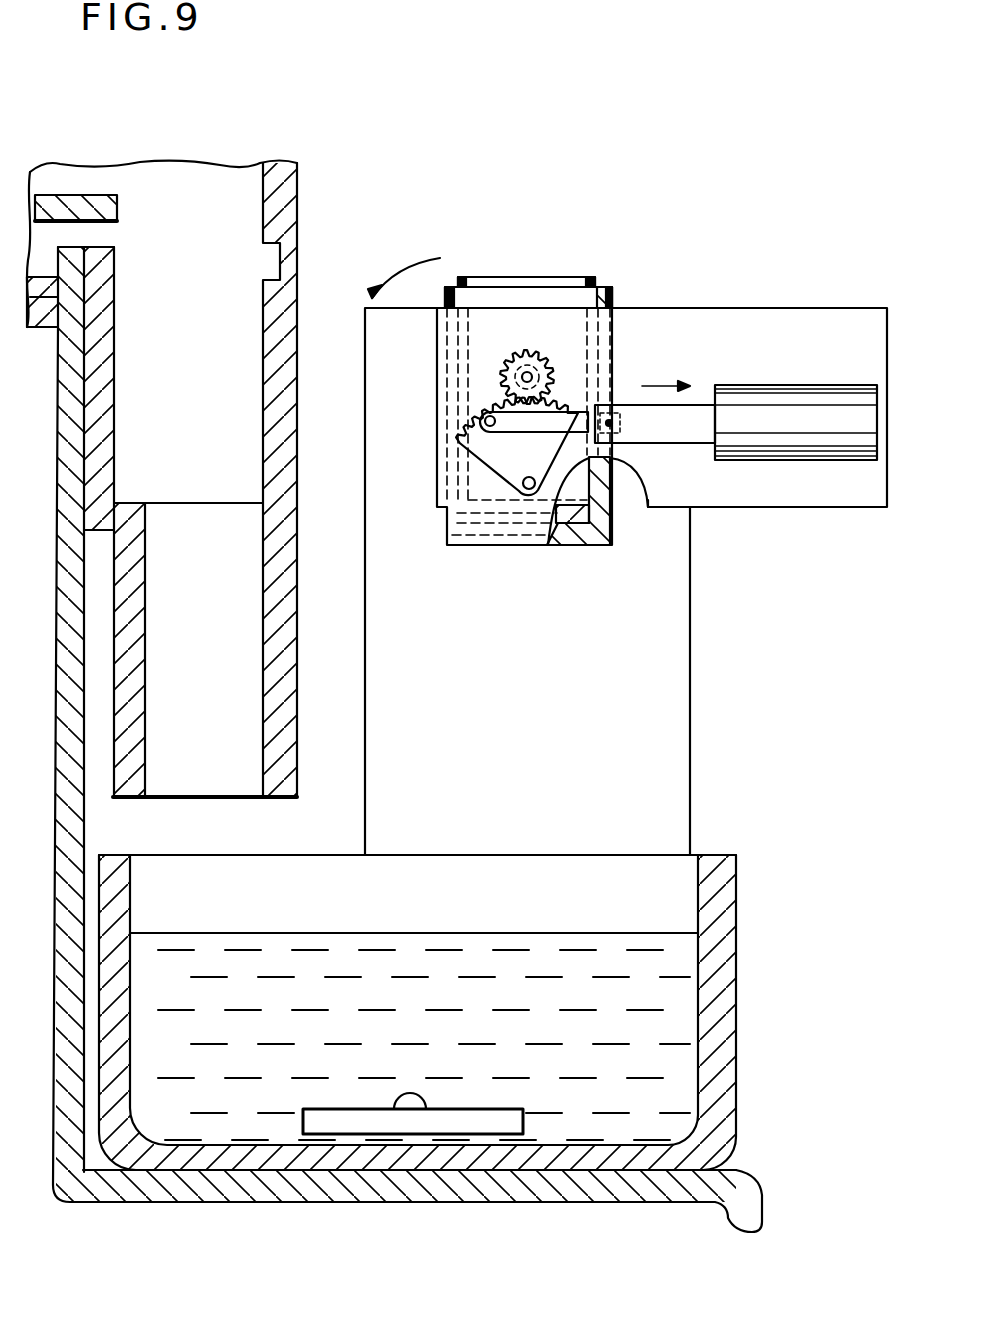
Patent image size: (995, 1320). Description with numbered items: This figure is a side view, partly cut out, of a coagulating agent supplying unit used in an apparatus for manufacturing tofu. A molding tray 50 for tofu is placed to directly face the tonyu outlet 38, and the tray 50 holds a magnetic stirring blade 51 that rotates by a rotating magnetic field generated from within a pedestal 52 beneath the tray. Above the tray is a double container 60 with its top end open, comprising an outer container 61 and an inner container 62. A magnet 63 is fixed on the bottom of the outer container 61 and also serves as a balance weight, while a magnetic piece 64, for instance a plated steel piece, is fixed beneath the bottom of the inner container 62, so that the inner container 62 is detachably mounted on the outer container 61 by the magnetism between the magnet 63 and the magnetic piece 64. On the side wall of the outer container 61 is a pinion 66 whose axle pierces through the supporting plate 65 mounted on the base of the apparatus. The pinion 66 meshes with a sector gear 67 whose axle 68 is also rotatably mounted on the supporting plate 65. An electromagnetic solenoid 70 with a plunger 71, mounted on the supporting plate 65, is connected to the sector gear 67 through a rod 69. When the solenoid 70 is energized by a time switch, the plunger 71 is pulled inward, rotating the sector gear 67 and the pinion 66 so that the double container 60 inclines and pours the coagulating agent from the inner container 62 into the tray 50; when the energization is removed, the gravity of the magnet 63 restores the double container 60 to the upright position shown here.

The tonyu outlet 38 is at (192, 513).
The molding tray 50 is at (718, 980).
The magnetic stirring blade 51 is at (505, 1112).
The pedestal 52 is at (598, 1195).
The double container 60 is at (608, 284).
The outer container 61 is at (614, 300).
The inner container 62 is at (585, 285).
The magnet 63 is at (590, 546).
The magnetic piece 64 is at (612, 522).
The supporting plate 65 is at (820, 322).
The pinion 66 is at (530, 355).
The sector gear 67 is at (474, 452).
The axle 68 is at (522, 486).
The rod 69 is at (483, 424).
The electromagnetic solenoid 70 is at (826, 448).
The plunger 71 is at (697, 410).